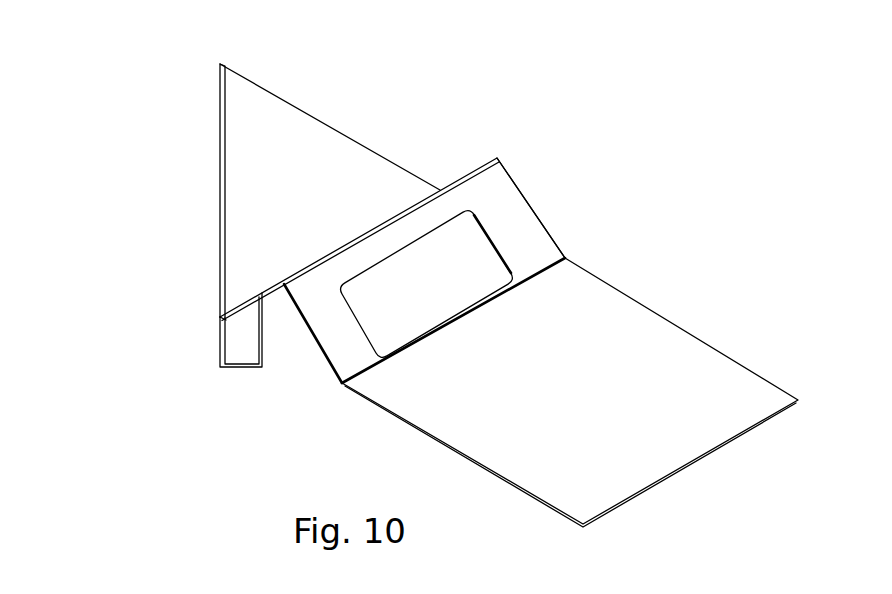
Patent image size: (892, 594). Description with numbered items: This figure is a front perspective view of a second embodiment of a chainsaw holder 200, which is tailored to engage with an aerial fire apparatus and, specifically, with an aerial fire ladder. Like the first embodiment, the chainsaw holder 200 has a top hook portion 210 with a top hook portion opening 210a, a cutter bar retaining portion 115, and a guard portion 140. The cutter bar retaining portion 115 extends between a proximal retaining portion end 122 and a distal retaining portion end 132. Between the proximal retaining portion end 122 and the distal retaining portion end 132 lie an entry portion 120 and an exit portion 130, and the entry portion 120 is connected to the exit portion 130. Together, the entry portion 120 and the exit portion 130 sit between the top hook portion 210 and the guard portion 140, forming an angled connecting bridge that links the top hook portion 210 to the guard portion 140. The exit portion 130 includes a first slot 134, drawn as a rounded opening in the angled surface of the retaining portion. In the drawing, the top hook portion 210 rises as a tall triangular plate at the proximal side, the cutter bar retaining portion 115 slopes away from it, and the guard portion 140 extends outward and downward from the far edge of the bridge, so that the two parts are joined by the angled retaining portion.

The chainsaw holder 200 is at (167, 152).
The top hook portion 210 is at (220, 342).
The top hook portion opening 210a is at (268, 333).
The proximal retaining portion end 122 is at (218, 317).
The entry portion 120 is at (257, 298).
The cutter bar retaining portion 115 is at (504, 162).
The exit portion 130 is at (513, 213).
The distal retaining portion end 132 is at (540, 266).
The first slot 134 is at (410, 293).
The guard portion 140 is at (660, 358).